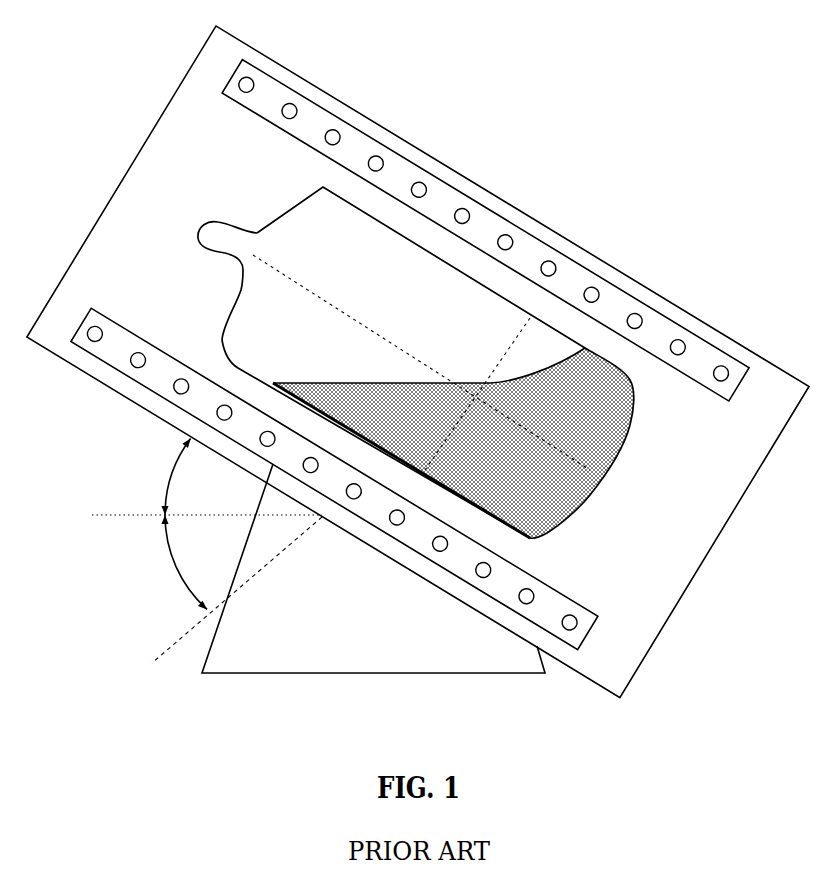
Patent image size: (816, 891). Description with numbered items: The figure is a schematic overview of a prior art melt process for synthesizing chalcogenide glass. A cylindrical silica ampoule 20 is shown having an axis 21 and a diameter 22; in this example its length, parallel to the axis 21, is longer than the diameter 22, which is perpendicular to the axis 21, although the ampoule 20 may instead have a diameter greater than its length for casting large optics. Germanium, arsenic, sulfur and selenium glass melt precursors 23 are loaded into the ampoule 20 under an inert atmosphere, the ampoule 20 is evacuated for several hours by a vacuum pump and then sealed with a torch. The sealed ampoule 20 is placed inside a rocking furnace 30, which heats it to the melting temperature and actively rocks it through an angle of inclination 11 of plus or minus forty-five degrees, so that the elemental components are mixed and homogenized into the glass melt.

The angle of inclination 11 is at (160, 480).
The ampoule 20 is at (290, 208).
The axis 21 is at (268, 261).
The diameter 22 is at (510, 360).
The glass melt precursors 23 is at (547, 488).
The rocking furnace 30 is at (512, 198).